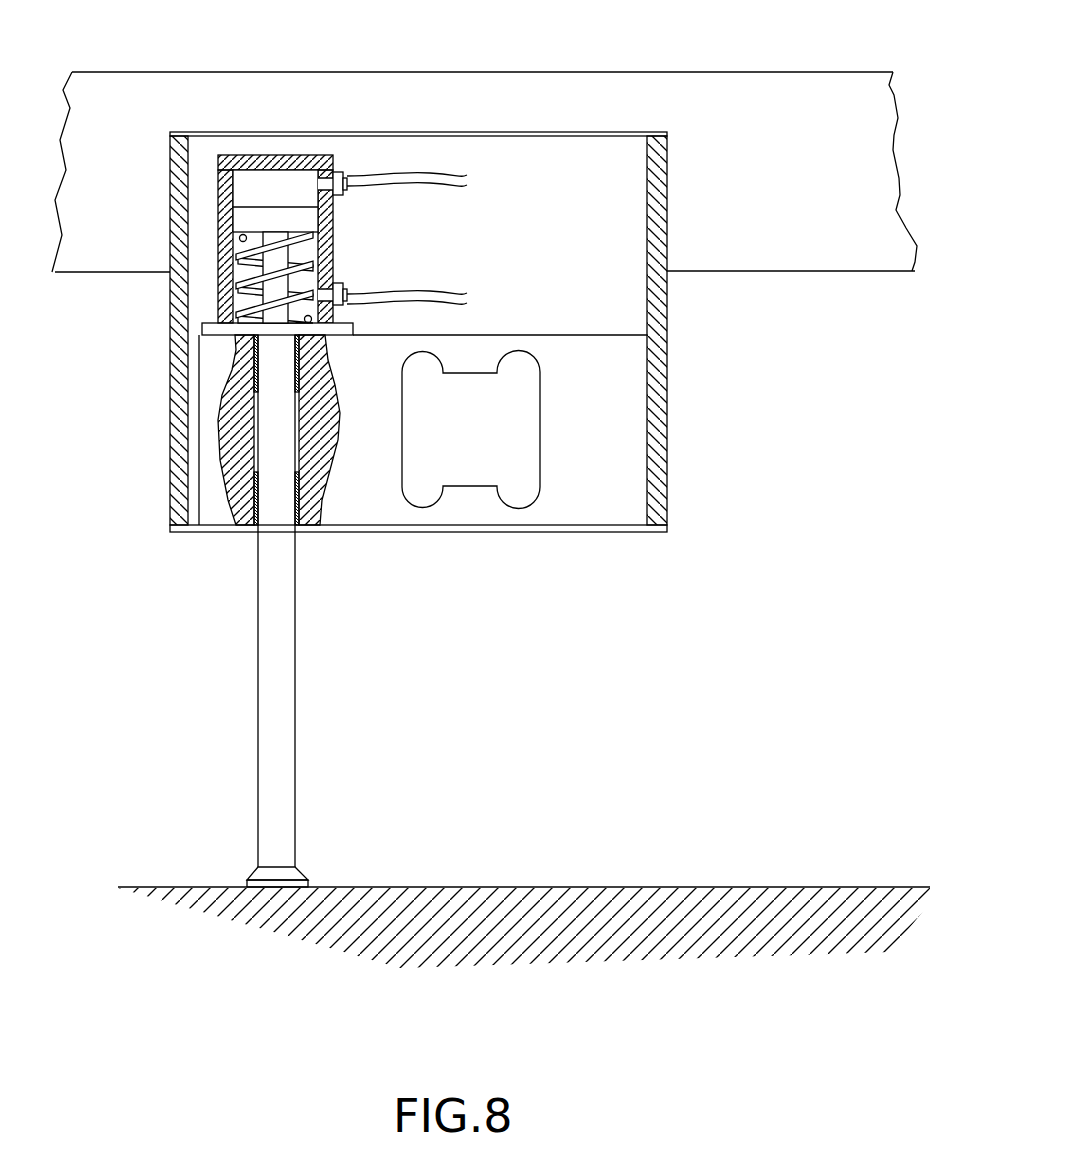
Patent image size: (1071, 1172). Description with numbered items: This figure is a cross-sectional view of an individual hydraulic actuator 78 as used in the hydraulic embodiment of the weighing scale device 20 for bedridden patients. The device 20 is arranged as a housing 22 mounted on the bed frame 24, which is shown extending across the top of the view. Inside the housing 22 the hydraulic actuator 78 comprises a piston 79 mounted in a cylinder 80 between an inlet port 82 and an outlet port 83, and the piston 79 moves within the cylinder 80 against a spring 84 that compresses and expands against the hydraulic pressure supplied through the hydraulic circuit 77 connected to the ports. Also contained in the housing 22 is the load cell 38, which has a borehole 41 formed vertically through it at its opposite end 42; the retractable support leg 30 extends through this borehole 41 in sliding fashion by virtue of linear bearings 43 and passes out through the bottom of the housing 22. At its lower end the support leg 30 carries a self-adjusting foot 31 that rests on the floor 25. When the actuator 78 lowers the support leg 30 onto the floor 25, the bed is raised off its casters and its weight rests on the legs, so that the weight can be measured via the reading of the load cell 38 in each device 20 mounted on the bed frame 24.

The weighing scale device 20 is at (497, 118).
The housing 22 is at (560, 532).
The bed frame 24 is at (662, 72).
The floor 25 is at (605, 887).
The support leg 30 is at (297, 629).
The self-adjusting feet 31 is at (330, 843).
The load cell 38 is at (523, 333).
The borehole 41 is at (253, 393).
The opposite end 42 is at (208, 460).
The linear bearings 43 is at (268, 503).
The hydraulic circuit 77 is at (491, 228).
The hydraulic actuator 78 is at (265, 140).
The piston 79 is at (298, 200).
The cylinder 80 is at (205, 157).
The inlet port 82 is at (347, 180).
The outlet port 83 is at (353, 268).
The spring 84 is at (215, 283).